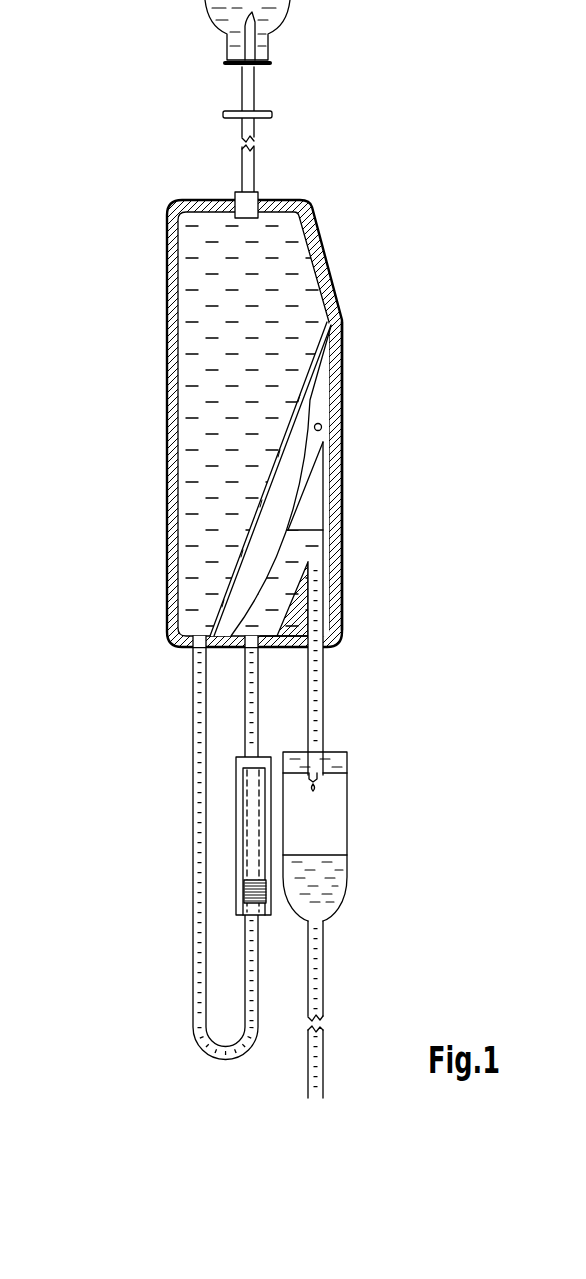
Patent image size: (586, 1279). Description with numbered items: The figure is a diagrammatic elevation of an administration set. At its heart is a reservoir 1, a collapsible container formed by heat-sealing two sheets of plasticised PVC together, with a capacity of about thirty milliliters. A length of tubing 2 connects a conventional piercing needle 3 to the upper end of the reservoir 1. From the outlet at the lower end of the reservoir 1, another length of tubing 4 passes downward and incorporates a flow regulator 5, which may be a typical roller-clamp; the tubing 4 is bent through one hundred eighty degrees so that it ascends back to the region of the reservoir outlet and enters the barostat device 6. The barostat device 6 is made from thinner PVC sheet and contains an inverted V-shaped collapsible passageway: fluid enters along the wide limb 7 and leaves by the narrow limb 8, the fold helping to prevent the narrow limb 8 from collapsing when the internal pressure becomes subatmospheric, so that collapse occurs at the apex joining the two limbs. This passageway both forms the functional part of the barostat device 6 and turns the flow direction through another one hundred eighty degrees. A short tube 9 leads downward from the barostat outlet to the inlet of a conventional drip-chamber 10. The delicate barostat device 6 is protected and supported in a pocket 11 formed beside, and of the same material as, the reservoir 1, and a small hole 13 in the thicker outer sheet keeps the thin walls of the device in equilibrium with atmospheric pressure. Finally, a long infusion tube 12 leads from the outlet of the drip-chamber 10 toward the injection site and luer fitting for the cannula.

The reservoir 1 is at (197, 348).
The tubing 2 is at (252, 130).
The piercing needle 3 is at (247, 86).
The tubing 4 is at (198, 740).
The flow regulator 5 is at (240, 897).
The barostat device 6 is at (303, 520).
The wide limb 7 is at (282, 573).
The narrow limb 8 is at (313, 615).
The short tube 9 is at (320, 708).
The drip-chamber 10 is at (310, 832).
The pocket 11 is at (320, 392).
The infusion tube 12 is at (318, 970).
The small hole 13 is at (322, 428).